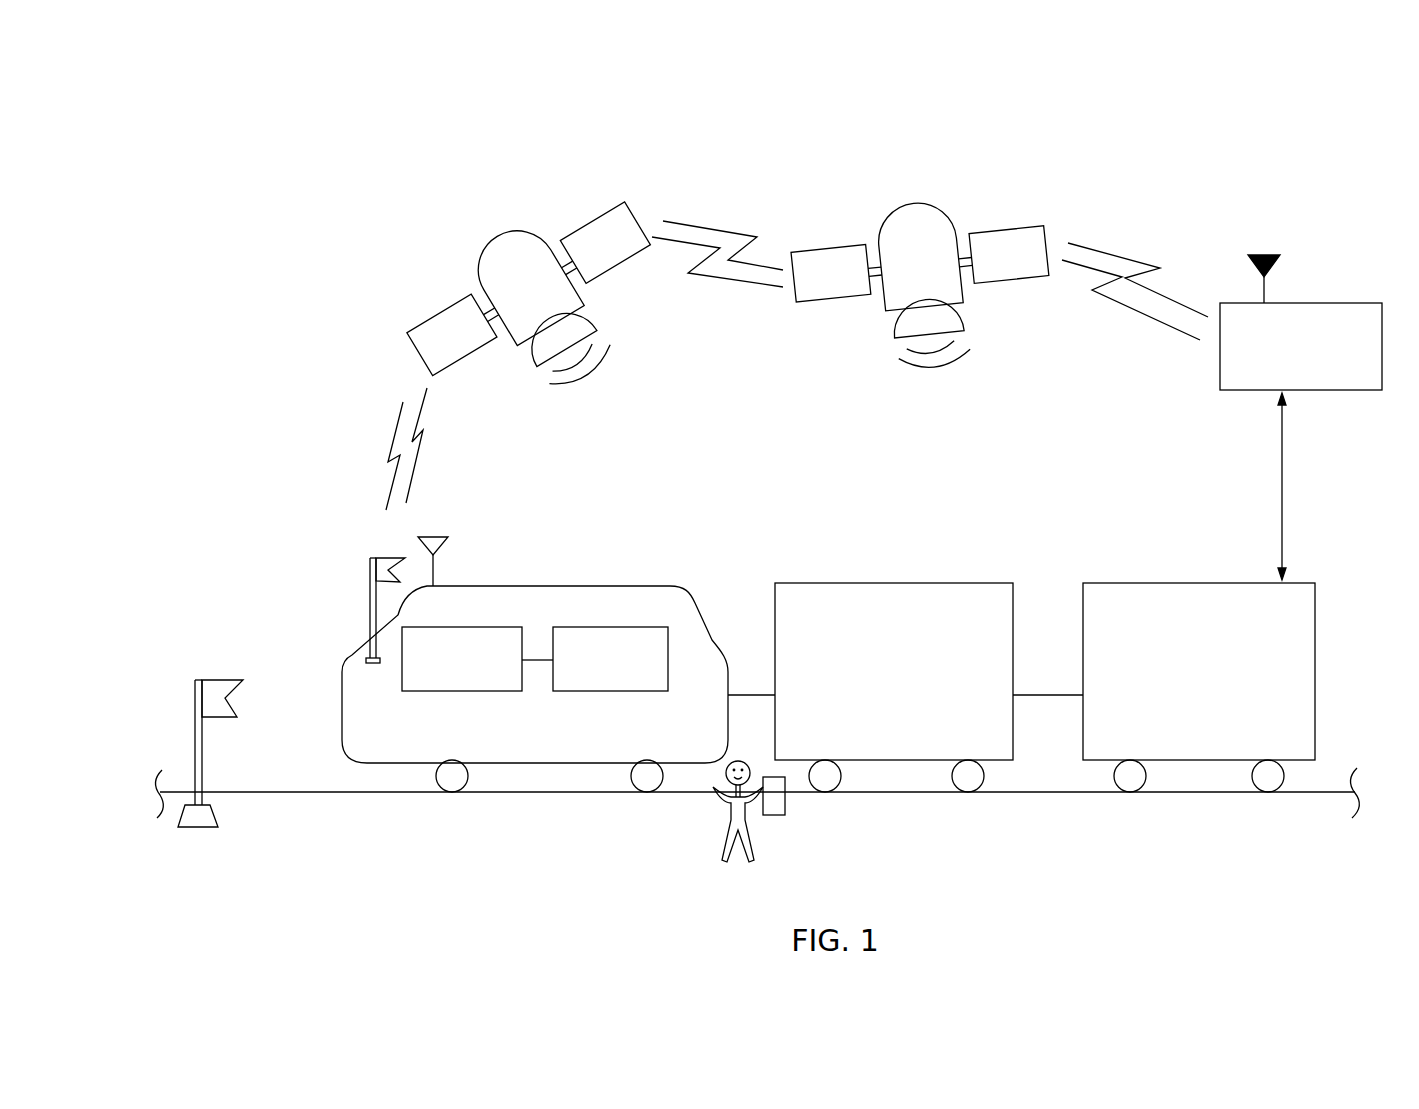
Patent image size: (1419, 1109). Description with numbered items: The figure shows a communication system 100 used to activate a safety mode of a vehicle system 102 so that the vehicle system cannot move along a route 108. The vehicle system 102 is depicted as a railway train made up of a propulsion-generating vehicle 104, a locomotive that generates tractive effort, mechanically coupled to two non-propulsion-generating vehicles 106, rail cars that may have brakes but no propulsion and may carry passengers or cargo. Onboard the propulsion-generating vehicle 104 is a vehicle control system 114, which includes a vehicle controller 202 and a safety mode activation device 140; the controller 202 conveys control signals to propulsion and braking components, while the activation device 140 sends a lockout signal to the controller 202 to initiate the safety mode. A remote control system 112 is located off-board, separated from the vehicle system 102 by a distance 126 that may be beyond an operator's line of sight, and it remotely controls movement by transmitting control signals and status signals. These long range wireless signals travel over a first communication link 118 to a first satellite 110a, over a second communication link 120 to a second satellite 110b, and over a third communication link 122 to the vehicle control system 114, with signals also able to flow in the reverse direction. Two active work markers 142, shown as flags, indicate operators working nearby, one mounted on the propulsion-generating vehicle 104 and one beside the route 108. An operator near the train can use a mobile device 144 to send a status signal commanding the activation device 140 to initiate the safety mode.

The communication system 100 is at (1218, 145).
The vehicle system 102 is at (828, 628).
The propulsion-generating vehicle 104 is at (535, 642).
The non-propulsion-generating vehicles 106 is at (897, 583).
The route 108 is at (287, 792).
The first satellite 110a is at (887, 325).
The second satellite 110b is at (525, 367).
The remote control system 112 is at (1327, 303).
The vehicle control system 114 is at (466, 621).
The first communication link 118 is at (1113, 252).
The second communication link 120 is at (705, 225).
The third communication link 122 is at (390, 445).
The distance 126 is at (1290, 486).
The safety mode activation device 140 is at (627, 691).
The active work marker 142 is at (193, 707).
The mobile device 144 is at (772, 817).
The vehicle controller 202 is at (468, 691).